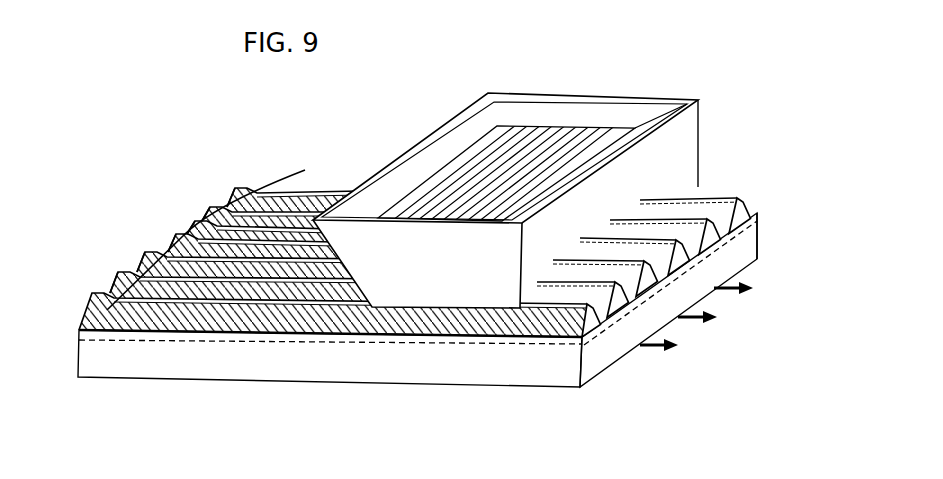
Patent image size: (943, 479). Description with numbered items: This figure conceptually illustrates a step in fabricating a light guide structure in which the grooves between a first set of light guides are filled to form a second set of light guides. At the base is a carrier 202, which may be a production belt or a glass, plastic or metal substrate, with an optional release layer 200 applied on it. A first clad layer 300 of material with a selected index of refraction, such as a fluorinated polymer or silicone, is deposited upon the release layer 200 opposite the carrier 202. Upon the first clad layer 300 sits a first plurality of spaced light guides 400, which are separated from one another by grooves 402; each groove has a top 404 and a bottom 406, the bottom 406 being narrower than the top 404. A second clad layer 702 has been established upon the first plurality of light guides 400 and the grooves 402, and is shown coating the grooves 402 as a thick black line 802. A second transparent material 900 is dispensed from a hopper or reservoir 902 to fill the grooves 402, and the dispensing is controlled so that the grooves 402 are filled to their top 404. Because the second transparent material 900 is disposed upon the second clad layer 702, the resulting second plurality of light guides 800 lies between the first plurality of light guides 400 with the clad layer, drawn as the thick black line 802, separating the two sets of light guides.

The release layer 200 is at (594, 341).
The carrier 202 is at (298, 376).
The first clad layer 300 is at (534, 341).
The first plurality of spaced light guides 400 is at (333, 253).
The grooves 402 is at (220, 197).
The top 404 is at (617, 253).
The bottom 406 is at (623, 288).
The second clad layer 702 is at (312, 188).
The second plurality of light guides 800 is at (702, 198).
The thick black line 802 is at (752, 215).
The second transparent material 900 is at (499, 153).
The hopper or reservoir 902 is at (588, 97).